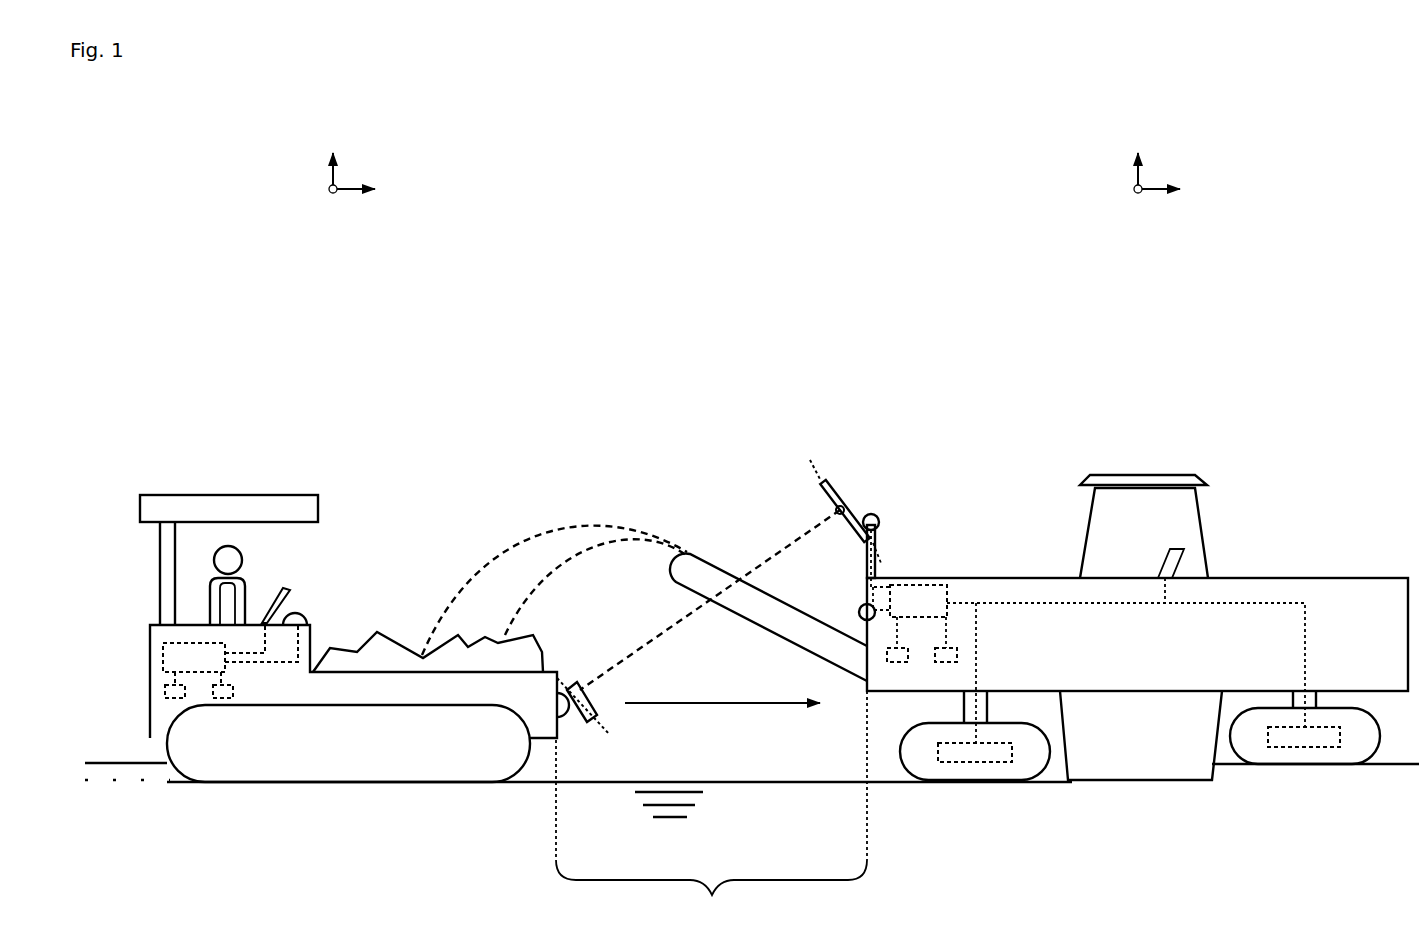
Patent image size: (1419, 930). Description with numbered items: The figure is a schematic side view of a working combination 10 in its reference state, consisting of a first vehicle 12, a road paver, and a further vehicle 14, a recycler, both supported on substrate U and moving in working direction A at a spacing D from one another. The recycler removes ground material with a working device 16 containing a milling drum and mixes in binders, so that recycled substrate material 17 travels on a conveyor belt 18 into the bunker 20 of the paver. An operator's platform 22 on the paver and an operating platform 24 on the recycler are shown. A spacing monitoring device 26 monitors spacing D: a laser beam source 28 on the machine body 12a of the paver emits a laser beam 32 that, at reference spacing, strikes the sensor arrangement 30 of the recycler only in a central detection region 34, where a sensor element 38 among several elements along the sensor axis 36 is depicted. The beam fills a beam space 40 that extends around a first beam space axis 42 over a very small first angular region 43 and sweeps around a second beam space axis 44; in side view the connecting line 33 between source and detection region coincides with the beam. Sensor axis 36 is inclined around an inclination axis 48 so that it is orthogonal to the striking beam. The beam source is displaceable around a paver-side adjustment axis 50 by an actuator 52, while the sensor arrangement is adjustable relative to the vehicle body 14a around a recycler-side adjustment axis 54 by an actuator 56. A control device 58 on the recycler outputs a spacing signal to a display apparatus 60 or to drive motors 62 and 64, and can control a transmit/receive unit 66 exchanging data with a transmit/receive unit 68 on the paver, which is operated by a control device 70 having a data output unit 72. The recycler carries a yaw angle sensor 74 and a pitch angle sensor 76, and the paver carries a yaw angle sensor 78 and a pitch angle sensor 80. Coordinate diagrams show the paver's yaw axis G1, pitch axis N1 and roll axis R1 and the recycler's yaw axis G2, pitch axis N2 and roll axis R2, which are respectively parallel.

The working combination 10 is at (227, 284).
The first vehicle 12 is at (219, 433).
The machine body 12a is at (353, 703).
The further vehicle 14 is at (1081, 392).
The vehicle body 14a is at (1137, 634).
The working device 16 is at (1141, 735).
The recycled substrate material 17 is at (551, 540).
The conveyor belt 18 is at (768, 617).
The bunker 20 is at (397, 630).
The operator's platform 22 is at (318, 546).
The operating platform 24 is at (1194, 518).
The spacing monitoring device 26 is at (674, 421).
The laser beam source 28 is at (580, 686).
The sensor arrangement 30 is at (836, 492).
The laser beam 32 is at (758, 568).
The connecting line 33 is at (660, 636).
The central detection region 34 is at (845, 506).
The sensor axis 36 is at (812, 462).
The sensor element 38 is at (858, 514).
The beam space 40 is at (787, 542).
The first beam space axis 42 is at (598, 712).
The first angular region 43 is at (710, 600).
The second beam space axis 44 is at (555, 668).
The inclination axis 48 is at (840, 516).
The paver-side adjustment axis 50 is at (556, 705).
The actuator 52 is at (561, 716).
The recycler-side adjustment axis 54 is at (880, 522).
The actuator 56 is at (880, 530).
The control device 58 is at (1089, 664).
The display apparatus 60 is at (1182, 558).
The drive motor 62 is at (1302, 738).
The drive motor 64 is at (958, 752).
The transmit/receive unit 66 is at (860, 612).
The transmit/receive unit 68 is at (302, 617).
The control device 70 is at (230, 648).
The data output unit 72 is at (287, 592).
The yaw angle sensor 74 is at (945, 665).
The pitch angle sensor 76 is at (894, 665).
The yaw angle sensor 78 is at (233, 692).
The pitch angle sensor 80 is at (165, 692).
The working direction A is at (692, 705).
The spacing D is at (711, 808).
The substrate U is at (766, 781).
The yaw axis G1 is at (332, 185).
The pitch axis N1 is at (329, 191).
The roll axis R1 is at (340, 191).
The yaw axis G2 is at (1137, 185).
The pitch axis N2 is at (1134, 191).
The roll axis R2 is at (1145, 191).